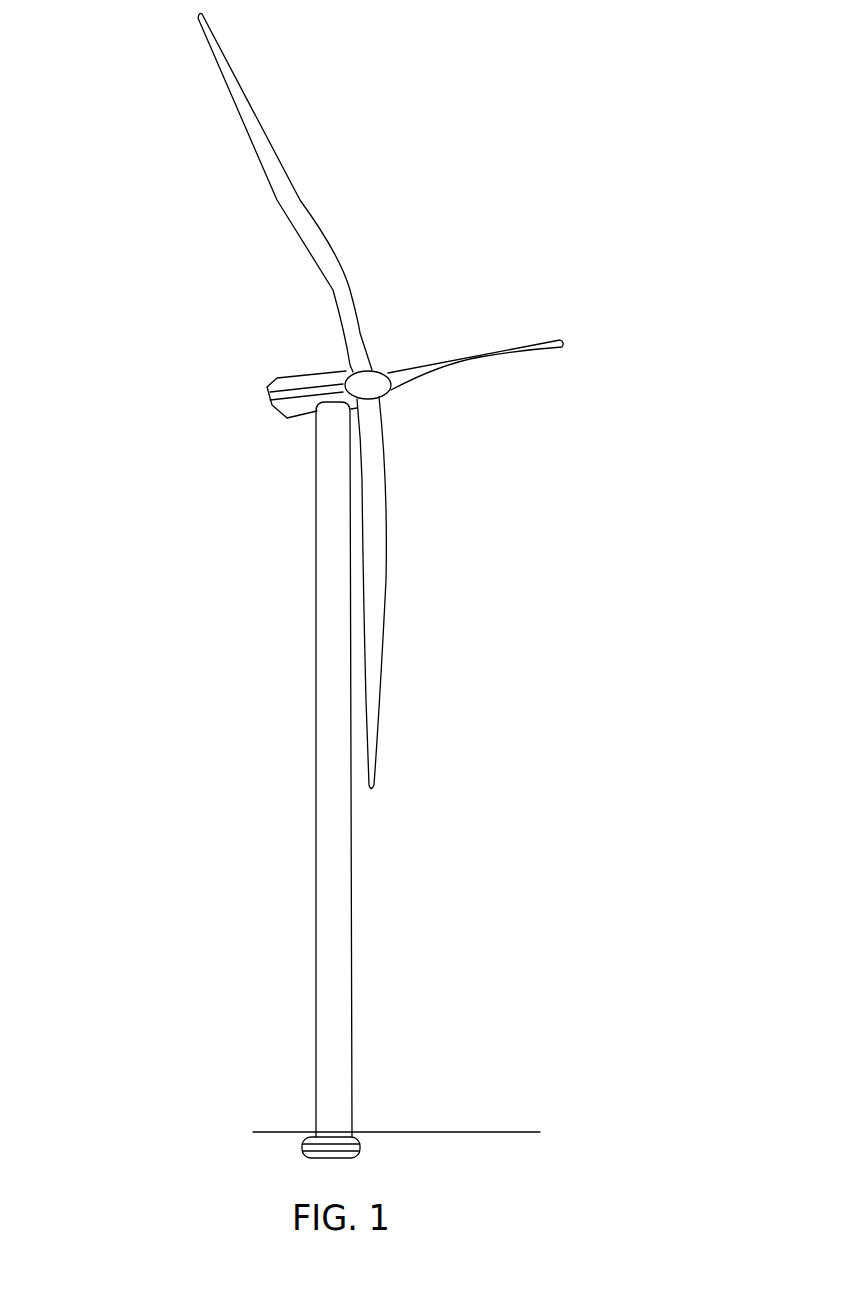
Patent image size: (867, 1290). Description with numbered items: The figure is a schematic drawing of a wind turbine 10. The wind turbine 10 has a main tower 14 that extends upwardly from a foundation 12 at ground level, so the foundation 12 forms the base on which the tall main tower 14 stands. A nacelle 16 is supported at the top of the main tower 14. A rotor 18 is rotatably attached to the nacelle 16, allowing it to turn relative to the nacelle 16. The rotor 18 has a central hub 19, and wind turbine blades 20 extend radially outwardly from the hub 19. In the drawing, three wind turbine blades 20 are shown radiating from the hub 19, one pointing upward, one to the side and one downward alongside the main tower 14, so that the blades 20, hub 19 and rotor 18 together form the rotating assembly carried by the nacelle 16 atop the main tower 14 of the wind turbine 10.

The wind turbine 10 is at (98, 317).
The foundation 12 is at (302, 1142).
The main tower 14 is at (355, 978).
The nacelle 16 is at (296, 373).
The rotor 18 is at (418, 425).
The central hub 19 is at (381, 370).
The wind turbine blades 20 is at (338, 258).